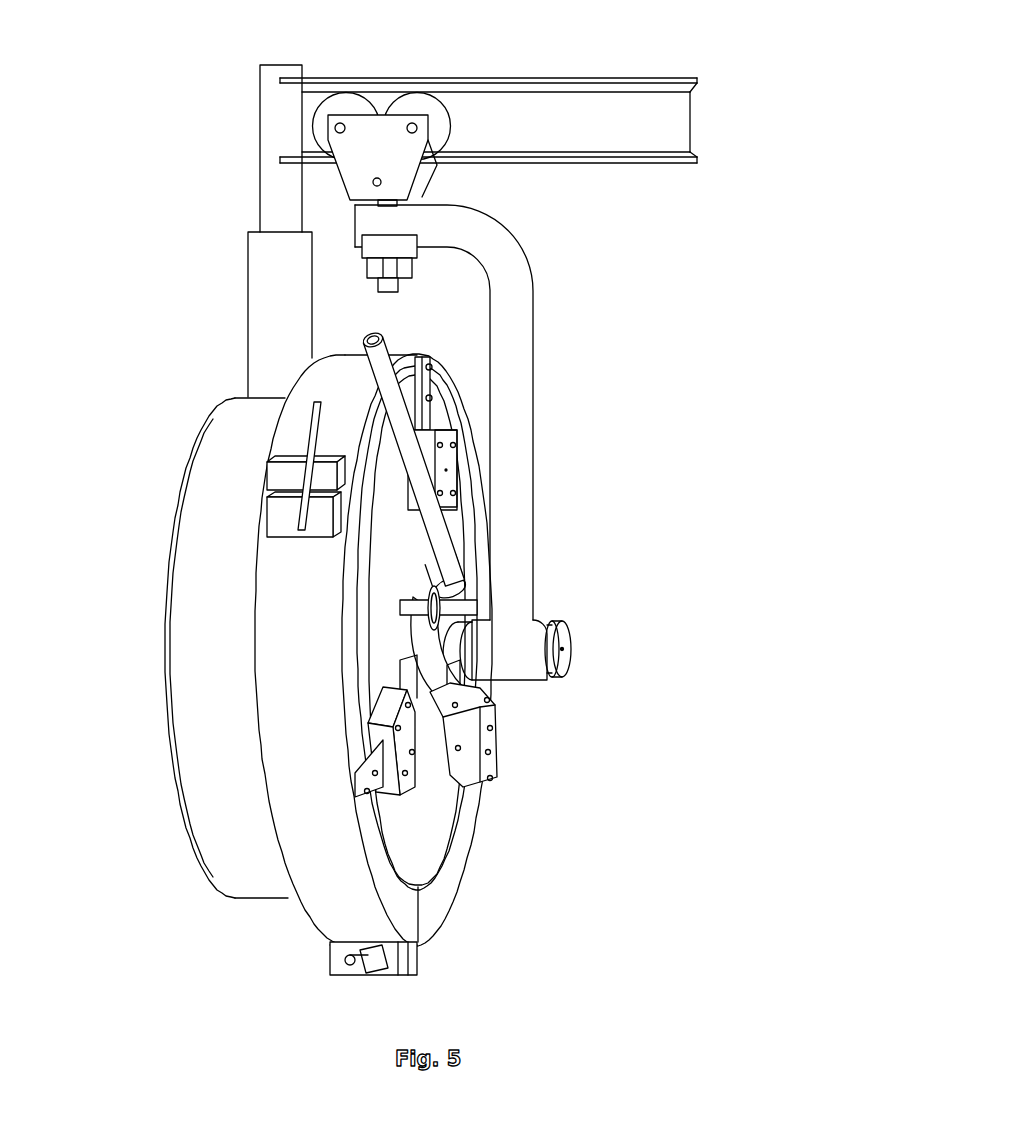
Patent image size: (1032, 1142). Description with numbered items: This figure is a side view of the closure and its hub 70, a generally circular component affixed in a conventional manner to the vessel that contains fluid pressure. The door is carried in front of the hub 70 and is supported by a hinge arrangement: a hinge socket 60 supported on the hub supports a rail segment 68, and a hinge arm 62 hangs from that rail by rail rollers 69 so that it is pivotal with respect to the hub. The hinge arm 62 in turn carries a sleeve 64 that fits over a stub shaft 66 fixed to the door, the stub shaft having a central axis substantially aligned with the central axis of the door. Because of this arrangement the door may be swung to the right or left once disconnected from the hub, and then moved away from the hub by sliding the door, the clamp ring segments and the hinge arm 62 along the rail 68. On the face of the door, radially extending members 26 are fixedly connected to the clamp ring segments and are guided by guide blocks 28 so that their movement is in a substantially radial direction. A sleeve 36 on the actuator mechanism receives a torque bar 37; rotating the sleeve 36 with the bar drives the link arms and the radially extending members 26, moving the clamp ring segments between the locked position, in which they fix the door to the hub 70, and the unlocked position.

The radially extending member 26 is at (431, 378).
The guide block 28 is at (449, 477).
The sleeve 36 is at (462, 587).
The torque bar 37 is at (385, 375).
The hinge socket 60 is at (277, 312).
The hinge arm 62 is at (511, 400).
The sleeve 64 is at (508, 657).
The stub shaft 66 is at (543, 648).
The rail segment 68 is at (515, 117).
The rail rollers 69 is at (422, 103).
The hub 70 is at (210, 685).